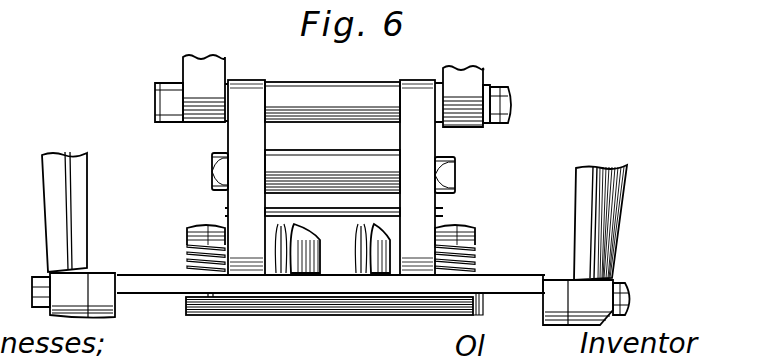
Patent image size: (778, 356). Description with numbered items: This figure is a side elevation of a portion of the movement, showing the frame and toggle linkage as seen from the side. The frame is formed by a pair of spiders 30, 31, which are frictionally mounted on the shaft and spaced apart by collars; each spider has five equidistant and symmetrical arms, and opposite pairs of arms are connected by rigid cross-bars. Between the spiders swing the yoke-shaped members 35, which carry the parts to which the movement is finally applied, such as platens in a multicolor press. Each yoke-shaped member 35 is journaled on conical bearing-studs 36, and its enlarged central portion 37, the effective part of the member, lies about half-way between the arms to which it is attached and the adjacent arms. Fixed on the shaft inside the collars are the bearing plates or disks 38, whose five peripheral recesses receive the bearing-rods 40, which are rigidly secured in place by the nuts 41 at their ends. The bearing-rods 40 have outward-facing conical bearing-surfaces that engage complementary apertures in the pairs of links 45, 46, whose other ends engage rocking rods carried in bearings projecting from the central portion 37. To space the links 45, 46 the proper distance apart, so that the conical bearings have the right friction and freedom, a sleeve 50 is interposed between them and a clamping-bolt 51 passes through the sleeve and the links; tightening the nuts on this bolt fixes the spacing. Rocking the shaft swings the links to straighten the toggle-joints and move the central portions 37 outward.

The spider 30 is at (88, 222).
The spider 31 is at (605, 220).
The swinging yoke-shaped member 35 is at (383, 278).
The conical bearing-stud 36 is at (634, 300).
The enlarged central portion 37 is at (232, 287).
The bearing plate or disk 38 is at (333, 91).
The bearing-rod 40 is at (299, 102).
The nut 41 is at (513, 108).
The link or bar 45 is at (228, 207).
The link or bar 46 is at (400, 210).
The sleeve 50 is at (332, 171).
The clamping-bolt 51 is at (212, 172).